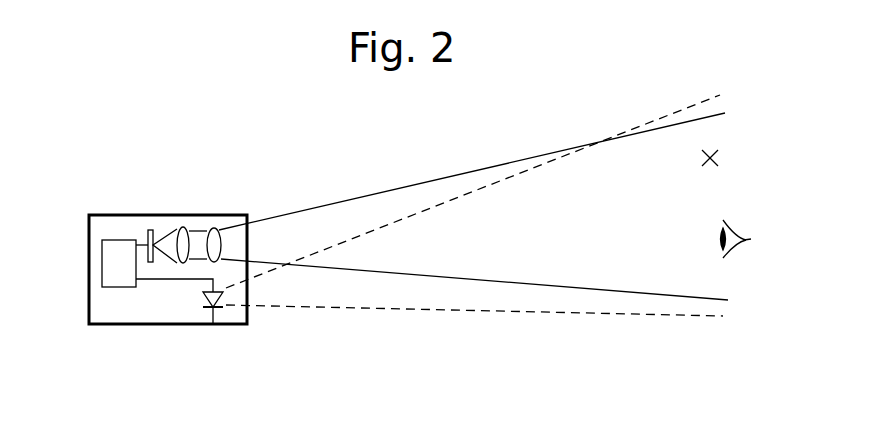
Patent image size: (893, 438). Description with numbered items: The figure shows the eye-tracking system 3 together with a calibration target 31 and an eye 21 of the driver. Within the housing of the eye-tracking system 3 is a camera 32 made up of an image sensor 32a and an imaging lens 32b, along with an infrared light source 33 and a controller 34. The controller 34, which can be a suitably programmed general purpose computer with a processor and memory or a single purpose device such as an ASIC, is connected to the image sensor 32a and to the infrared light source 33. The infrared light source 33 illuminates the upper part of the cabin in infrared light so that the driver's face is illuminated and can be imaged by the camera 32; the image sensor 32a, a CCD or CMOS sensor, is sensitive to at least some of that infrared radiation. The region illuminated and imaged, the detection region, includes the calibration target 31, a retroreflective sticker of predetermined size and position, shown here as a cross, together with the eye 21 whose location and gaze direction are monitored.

The eye-tracking system 3 is at (97, 213).
The eye 21 is at (740, 243).
The calibration target 31 is at (700, 157).
The camera 32 is at (237, 146).
The image sensor 32a is at (150, 229).
The imaging lens 32b is at (213, 228).
The infrared light source 33 is at (206, 324).
The controller 34 is at (102, 263).